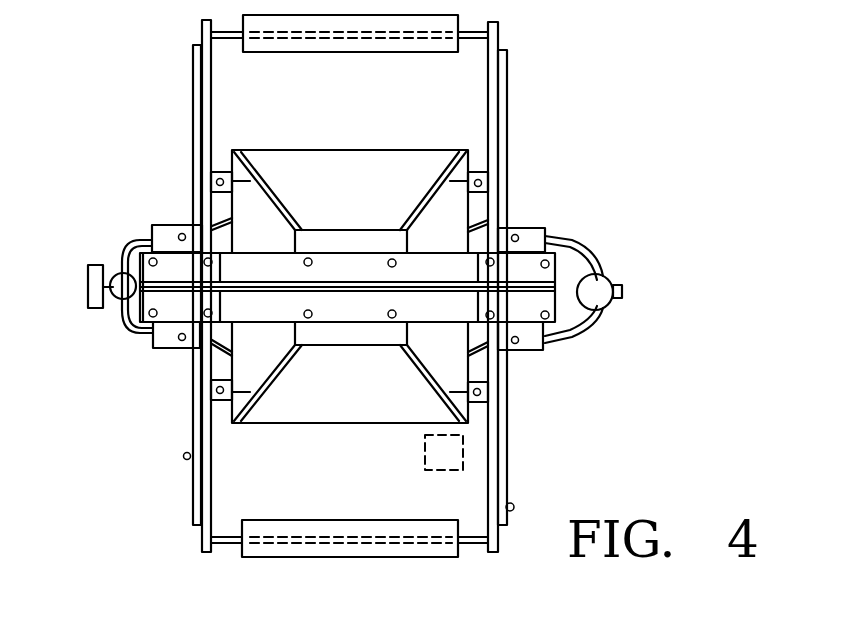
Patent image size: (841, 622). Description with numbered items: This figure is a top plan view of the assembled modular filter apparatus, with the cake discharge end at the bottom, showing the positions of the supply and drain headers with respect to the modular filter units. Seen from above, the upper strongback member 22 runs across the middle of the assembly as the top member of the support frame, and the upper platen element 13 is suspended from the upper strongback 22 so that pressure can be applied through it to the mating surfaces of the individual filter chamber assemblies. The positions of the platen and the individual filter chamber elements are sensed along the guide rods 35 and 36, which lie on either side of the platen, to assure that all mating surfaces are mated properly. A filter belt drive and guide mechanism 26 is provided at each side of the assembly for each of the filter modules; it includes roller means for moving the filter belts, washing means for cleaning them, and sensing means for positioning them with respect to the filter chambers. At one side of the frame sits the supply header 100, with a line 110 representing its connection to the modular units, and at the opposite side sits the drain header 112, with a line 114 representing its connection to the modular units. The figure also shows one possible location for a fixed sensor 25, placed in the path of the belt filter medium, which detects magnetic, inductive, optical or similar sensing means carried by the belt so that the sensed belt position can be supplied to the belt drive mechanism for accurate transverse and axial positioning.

The filter belt drive and guide mechanism 26 is at (220, 11).
The upper platen element 13 is at (368, 206).
The upper strongback member 22 is at (367, 282).
The guide rod 36 is at (218, 183).
The guide rod 35 is at (222, 392).
The line 110 is at (134, 252).
The supply header 100 is at (124, 290).
The line 114 is at (587, 248).
The drain header 112 is at (605, 283).
The fixed sensor 25 is at (465, 458).